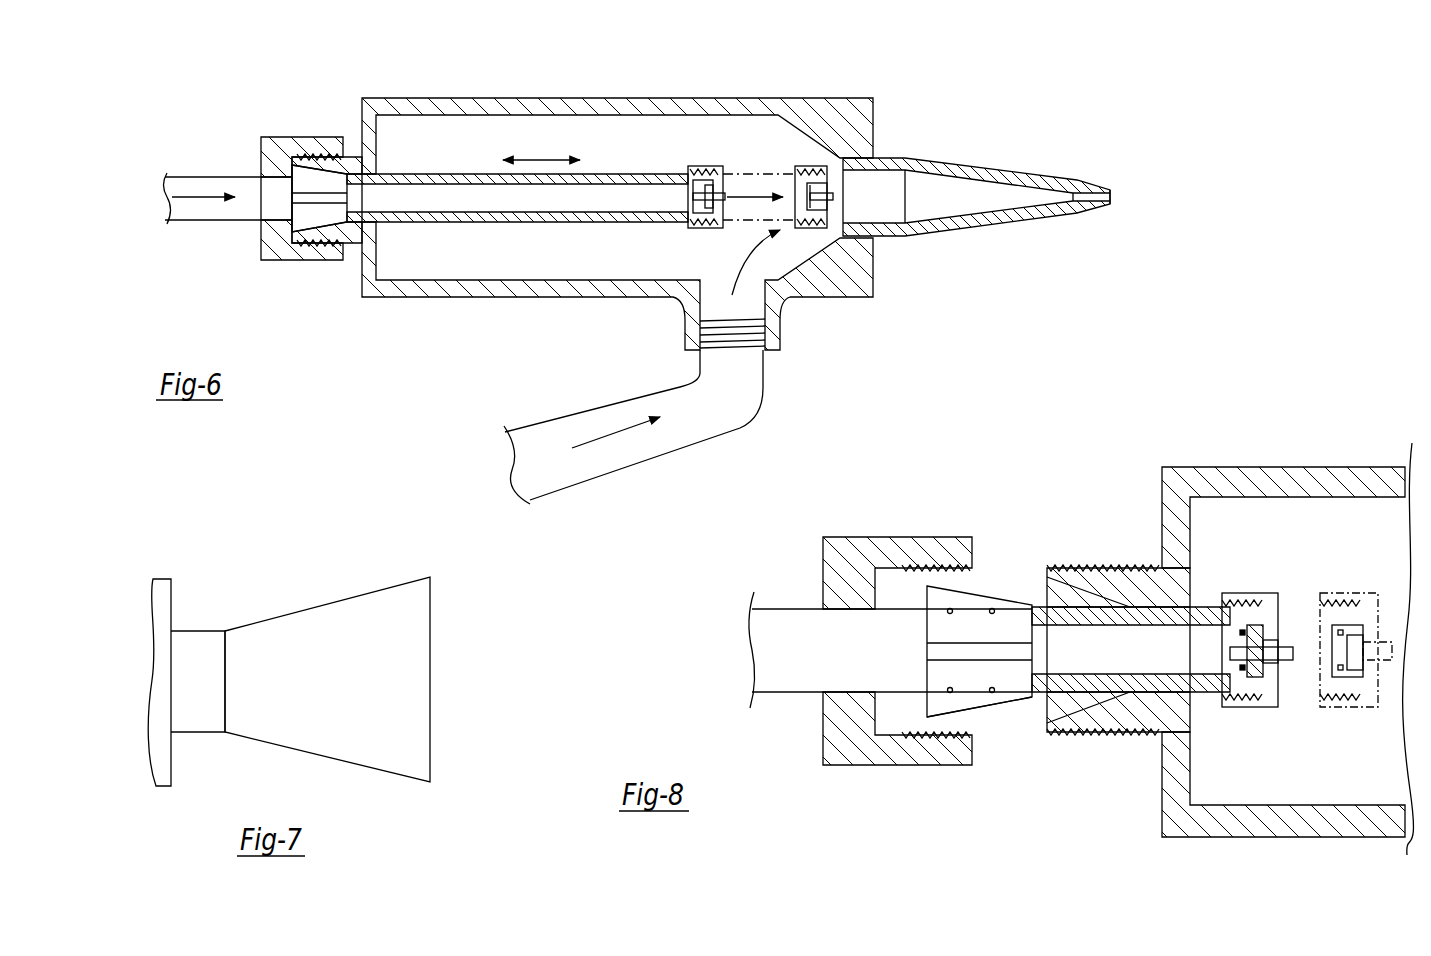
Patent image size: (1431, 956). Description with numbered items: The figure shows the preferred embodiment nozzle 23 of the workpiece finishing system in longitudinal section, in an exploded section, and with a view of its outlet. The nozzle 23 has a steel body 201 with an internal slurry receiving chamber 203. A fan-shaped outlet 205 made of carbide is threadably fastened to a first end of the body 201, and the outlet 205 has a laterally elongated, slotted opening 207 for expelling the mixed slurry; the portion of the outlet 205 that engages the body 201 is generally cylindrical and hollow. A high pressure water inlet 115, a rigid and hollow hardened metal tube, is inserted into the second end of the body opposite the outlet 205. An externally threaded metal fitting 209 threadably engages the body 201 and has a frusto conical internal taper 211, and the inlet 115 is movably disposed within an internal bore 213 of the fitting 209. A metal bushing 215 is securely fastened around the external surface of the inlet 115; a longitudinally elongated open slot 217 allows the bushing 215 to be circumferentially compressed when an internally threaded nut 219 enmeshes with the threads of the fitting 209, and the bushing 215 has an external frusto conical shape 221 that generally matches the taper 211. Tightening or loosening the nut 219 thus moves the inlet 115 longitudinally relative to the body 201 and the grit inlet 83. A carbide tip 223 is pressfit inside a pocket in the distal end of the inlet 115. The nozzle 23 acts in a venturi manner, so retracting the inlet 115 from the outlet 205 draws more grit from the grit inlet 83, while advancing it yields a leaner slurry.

In FIG. 6, the nozzle 23 is at (664, 94).
In FIG. 6, the grit inlet 83 is at (773, 317).
In FIG. 6, the high pressure water inlet 115 is at (221, 188).
In FIG. 8, the high pressure water inlet 115 is at (1200, 606).
In FIG. 6, the body 201 is at (547, 107).
In FIG. 8, the body 201 is at (1307, 487).
In FIG. 6, the internal slurry receiving chamber 203 is at (748, 140).
In FIG. 8, the internal slurry receiving chamber 203 is at (1162, 649).
In FIG. 6, the fan-shaped outlet 205 is at (965, 170).
In FIG. 7, the fan-shaped outlet 205 is at (291, 655).
In FIG. 6, the slotted opening 207 is at (1112, 197).
In FIG. 6, the externally threaded metal fitting 209 is at (353, 157).
In FIG. 8, the externally threaded metal fitting 209 is at (1133, 577).
In FIG. 8, the frusto conical internal taper 211 is at (1045, 607).
In FIG. 8, the internal bore 213 is at (1155, 683).
In FIG. 6, the metal bushing 215 is at (307, 167).
In FIG. 8, the metal bushing 215 is at (973, 600).
In FIG. 8, the slot 217 is at (957, 652).
In FIG. 6, the internally threaded nut 219 is at (283, 262).
In FIG. 8, the internally threaded nut 219 is at (848, 563).
In FIG. 8, the external frusto conical shape 221 is at (985, 707).
In FIG. 6, the carbide tip 223 is at (708, 227).
In FIG. 8, the carbide tip 223 is at (1257, 630).